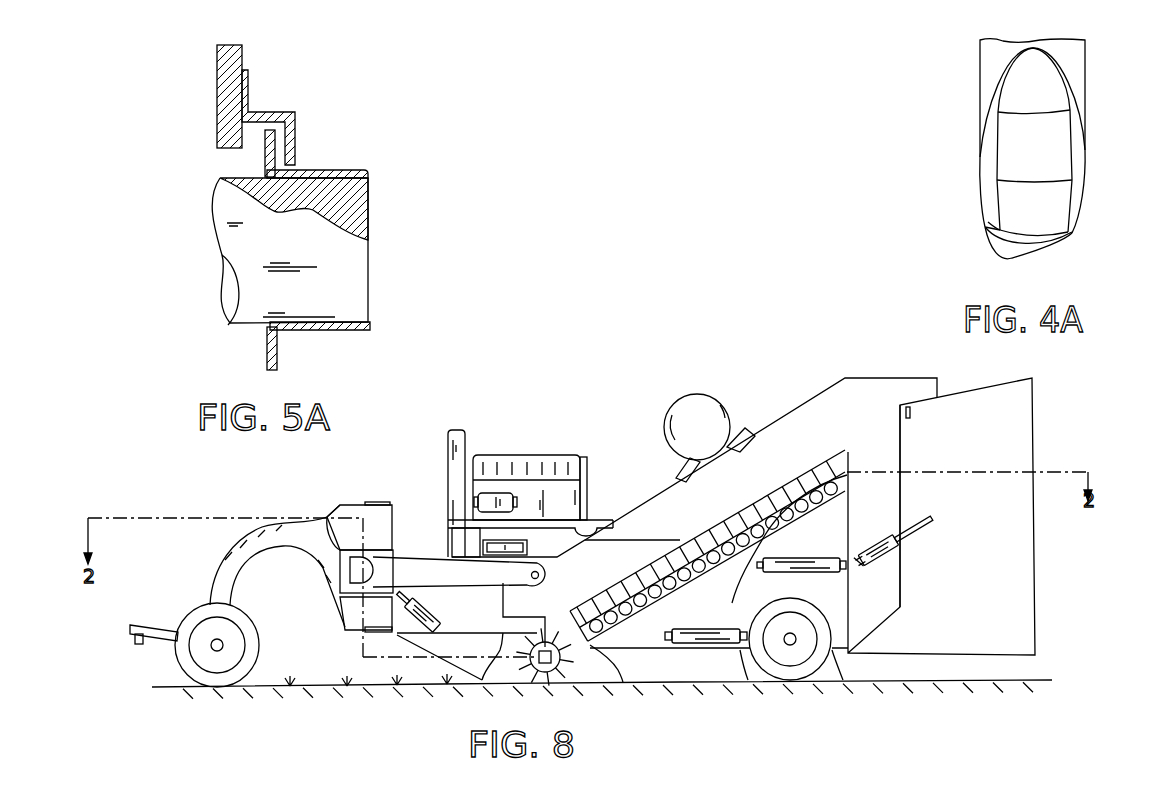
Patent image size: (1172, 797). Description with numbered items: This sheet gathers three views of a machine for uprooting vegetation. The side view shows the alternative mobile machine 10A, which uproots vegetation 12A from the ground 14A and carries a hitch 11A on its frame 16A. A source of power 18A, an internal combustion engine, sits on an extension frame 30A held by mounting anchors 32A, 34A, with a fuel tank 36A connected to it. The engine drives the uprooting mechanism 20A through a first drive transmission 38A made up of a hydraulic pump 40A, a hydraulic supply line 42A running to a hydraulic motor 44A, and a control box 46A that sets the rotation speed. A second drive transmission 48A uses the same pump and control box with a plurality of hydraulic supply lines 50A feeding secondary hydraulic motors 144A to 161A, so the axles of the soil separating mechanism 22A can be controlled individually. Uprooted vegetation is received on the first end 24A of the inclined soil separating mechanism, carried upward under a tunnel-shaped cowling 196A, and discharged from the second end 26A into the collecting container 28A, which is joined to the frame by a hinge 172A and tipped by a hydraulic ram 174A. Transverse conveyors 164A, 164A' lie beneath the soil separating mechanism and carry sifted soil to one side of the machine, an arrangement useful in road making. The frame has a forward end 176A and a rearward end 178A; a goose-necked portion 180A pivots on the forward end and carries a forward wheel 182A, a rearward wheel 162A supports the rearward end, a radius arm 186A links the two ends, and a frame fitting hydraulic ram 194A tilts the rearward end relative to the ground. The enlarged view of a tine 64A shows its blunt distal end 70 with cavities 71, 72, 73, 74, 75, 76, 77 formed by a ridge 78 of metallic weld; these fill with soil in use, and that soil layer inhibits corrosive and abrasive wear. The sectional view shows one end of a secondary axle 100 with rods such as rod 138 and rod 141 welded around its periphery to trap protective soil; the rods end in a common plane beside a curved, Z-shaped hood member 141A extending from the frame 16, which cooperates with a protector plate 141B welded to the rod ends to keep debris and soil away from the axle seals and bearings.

In FIG. 5A, the frame 16 is at (217, 63).
In FIG. 5A, the hood member 141A is at (273, 115).
In FIG. 5A, the protector plate 141B is at (263, 147).
In FIG. 5A, the rod 141 is at (318, 170).
In FIG. 5A, the secondary axle 100 is at (357, 297).
In FIG. 5A, the rod 138 is at (305, 330).
In FIG. 4A, the tine 64A is at (1075, 57).
In FIG. 4A, the distal end 70 is at (1078, 117).
In FIG. 4A, the cavity 71 is at (1053, 97).
In FIG. 4A, the cavity 72 is at (1062, 162).
In FIG. 4A, the cavity 73 is at (1050, 220).
In FIG. 4A, the cavity 74 is at (987, 132).
In FIG. 4A, the cavity 75 is at (1078, 201).
In FIG. 4A, the cavity 76 is at (990, 237).
In FIG. 4A, the cavity 77 is at (1010, 255).
In FIG. 4A, the ridge of metallic weld 78 is at (995, 195).
In FIG. 8, the mobile machine 10A is at (312, 472).
In FIG. 8, the hitch 11A is at (173, 627).
In FIG. 8, the vegetation 12A is at (313, 687).
In FIG. 8, the ground 14A is at (960, 683).
In FIG. 8, the frame 16A is at (758, 703).
In FIG. 8, the source of power 18A is at (548, 455).
In FIG. 8, the uprooting mechanism 20A is at (522, 699).
In FIG. 8, the soil separating mechanism 22A is at (793, 460).
In FIG. 8, the first end 24A is at (718, 604).
In FIG. 8, the second end 26A is at (761, 448).
In FIG. 8, the collecting container 28A is at (1014, 533).
In FIG. 8, the extension frame 30A is at (452, 547).
In FIG. 8, the mounting anchor 32A is at (450, 533).
In FIG. 8, the mounting anchor 34A is at (597, 523).
In FIG. 8, the fuel tank 36A is at (668, 418).
In FIG. 8, the first drive transmission 38A is at (515, 601).
In FIG. 8, the hydraulic pump mechanism 40A is at (500, 493).
In FIG. 8, the hydraulic supply line 42A is at (517, 618).
In FIG. 8, the hydraulic motor 44A is at (548, 688).
In FIG. 8, the control box 46A is at (527, 543).
In FIG. 8, the second drive transmission 48A is at (627, 531).
In FIG. 8, the hydraulic supply lines 50A is at (760, 490).
In FIG. 8, the secondary hydraulic motor 144A is at (580, 610).
In FIG. 8, the secondary hydraulic motor 161A is at (817, 465).
In FIG. 8, the rearward wheel 162A is at (796, 655).
In FIG. 8, the transverse conveyor 164A is at (825, 538).
In FIG. 8, the transverse conveyor 164A' is at (708, 661).
In FIG. 8, the hinge 172A is at (913, 412).
In FIG. 8, the hydraulic ram 174A is at (877, 560).
In FIG. 8, the forward end 176A is at (347, 558).
In FIG. 8, the rearward end 178A is at (900, 392).
In FIG. 8, the goose-necked portion 180A is at (217, 570).
In FIG. 8, the forward wheel 182A is at (178, 658).
In FIG. 8, the radius arm 186A is at (400, 582).
In FIG. 8, the frame fitting hydraulic ram 194A is at (425, 608).
In FIG. 8, the tunnel-shaped cowling 196A is at (765, 445).